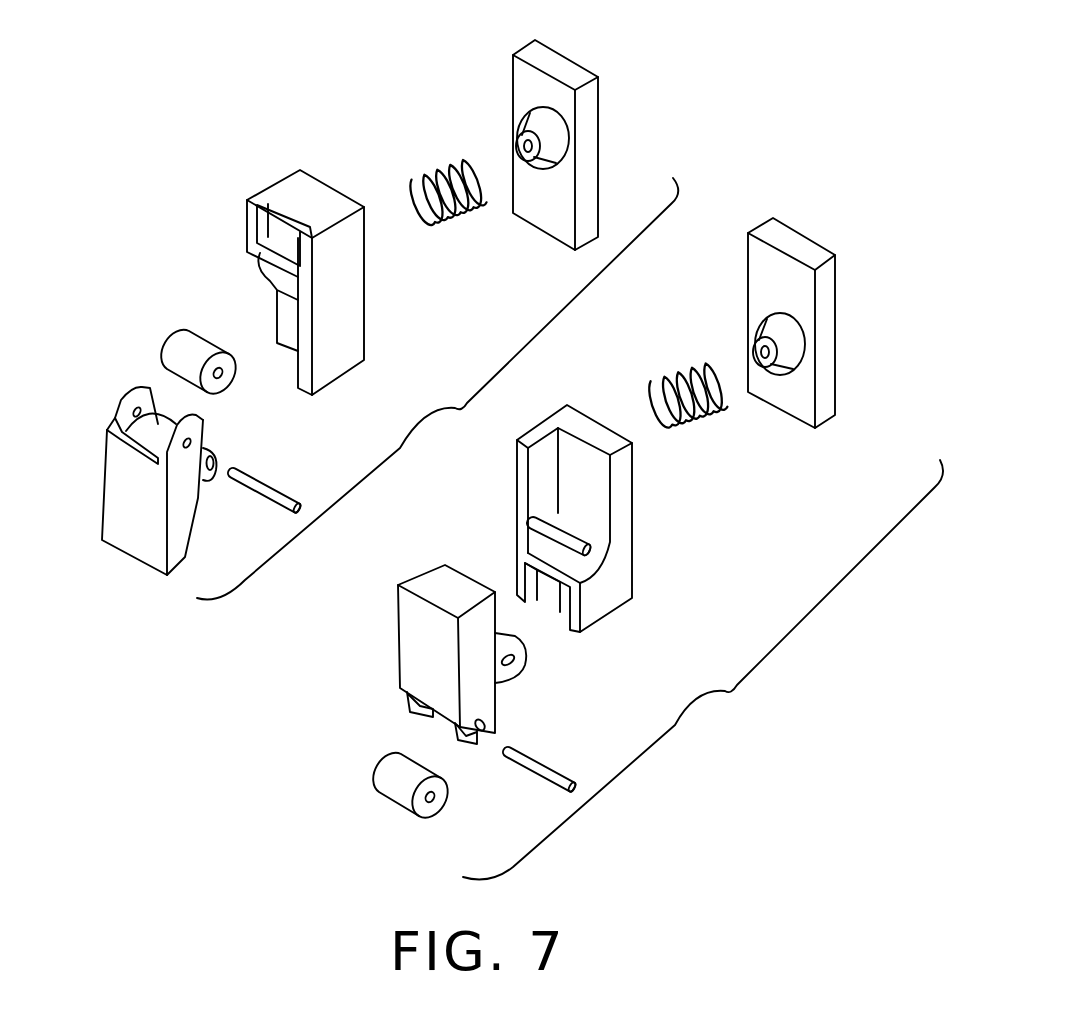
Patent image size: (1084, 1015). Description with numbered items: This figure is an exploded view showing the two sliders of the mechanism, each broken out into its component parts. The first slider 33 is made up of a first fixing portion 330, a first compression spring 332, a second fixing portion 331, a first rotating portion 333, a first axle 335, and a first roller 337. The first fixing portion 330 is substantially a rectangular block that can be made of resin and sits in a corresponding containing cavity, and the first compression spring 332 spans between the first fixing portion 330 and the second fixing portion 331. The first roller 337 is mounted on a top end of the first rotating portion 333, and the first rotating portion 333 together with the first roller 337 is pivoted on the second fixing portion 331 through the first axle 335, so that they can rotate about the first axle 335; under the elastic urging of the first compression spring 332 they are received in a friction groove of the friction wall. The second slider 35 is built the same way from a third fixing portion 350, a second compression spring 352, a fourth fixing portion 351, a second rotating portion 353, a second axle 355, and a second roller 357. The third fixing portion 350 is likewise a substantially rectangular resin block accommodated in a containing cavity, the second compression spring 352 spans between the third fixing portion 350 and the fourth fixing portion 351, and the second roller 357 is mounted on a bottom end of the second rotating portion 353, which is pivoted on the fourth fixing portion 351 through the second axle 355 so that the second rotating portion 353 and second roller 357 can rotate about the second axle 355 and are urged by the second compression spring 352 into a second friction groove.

The first slider 33 is at (437, 389).
The first fixing portion 330 is at (565, 70).
The second fixing portion 331 is at (290, 193).
The first compression spring 332 is at (447, 165).
The first rotating portion 333 is at (138, 530).
The first axle 335 is at (265, 488).
The first roller 337 is at (188, 362).
The second slider 35 is at (703, 669).
The third fixing portion 350 is at (783, 242).
The fourth fixing portion 351 is at (620, 520).
The second compression spring 352 is at (703, 420).
The second rotating portion 353 is at (417, 627).
The second axle 355 is at (542, 763).
The second roller 357 is at (400, 777).